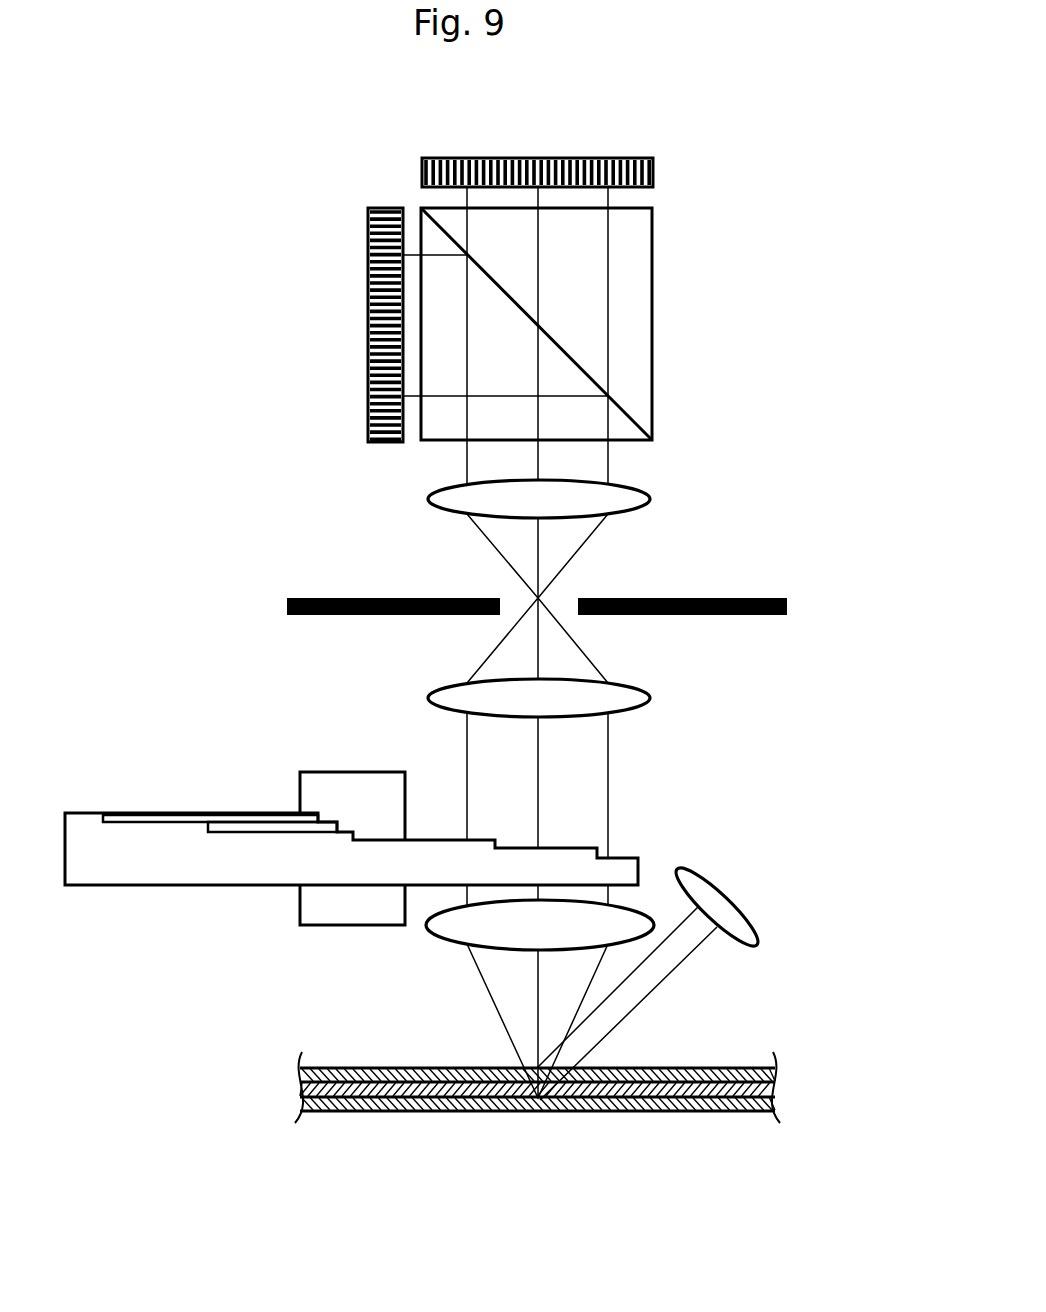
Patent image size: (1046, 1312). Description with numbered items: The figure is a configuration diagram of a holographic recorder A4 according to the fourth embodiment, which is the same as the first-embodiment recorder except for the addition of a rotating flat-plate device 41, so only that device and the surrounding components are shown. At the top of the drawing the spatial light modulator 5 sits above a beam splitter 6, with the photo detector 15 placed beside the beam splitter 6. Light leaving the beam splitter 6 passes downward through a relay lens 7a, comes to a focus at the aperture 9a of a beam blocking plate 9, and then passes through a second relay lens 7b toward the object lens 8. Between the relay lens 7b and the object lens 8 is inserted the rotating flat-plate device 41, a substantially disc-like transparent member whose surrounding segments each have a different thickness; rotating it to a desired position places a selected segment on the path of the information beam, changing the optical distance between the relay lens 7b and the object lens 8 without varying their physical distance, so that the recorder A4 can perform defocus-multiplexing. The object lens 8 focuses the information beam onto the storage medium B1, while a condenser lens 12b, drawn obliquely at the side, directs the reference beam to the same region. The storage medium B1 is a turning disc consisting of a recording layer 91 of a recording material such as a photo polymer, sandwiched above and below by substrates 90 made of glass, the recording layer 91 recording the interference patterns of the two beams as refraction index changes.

The holographic recorder A4 is at (174, 166).
The spatial light modulator 5 is at (653, 170).
The photo detector 15 is at (368, 300).
The beam splitter 6 is at (652, 312).
The relay lens 7a is at (428, 499).
The beam blocking plate 9 is at (685, 599).
The aperture 9a is at (578, 601).
The relay lens 7b is at (428, 698).
The rotating flat-plate device 41 is at (158, 885).
The object lens 8 is at (427, 925).
The condenser lens 12b is at (757, 945).
The storage medium B1 is at (676, 1143).
The substrate 90 is at (775, 1072).
The recording layer 91 is at (777, 1089).